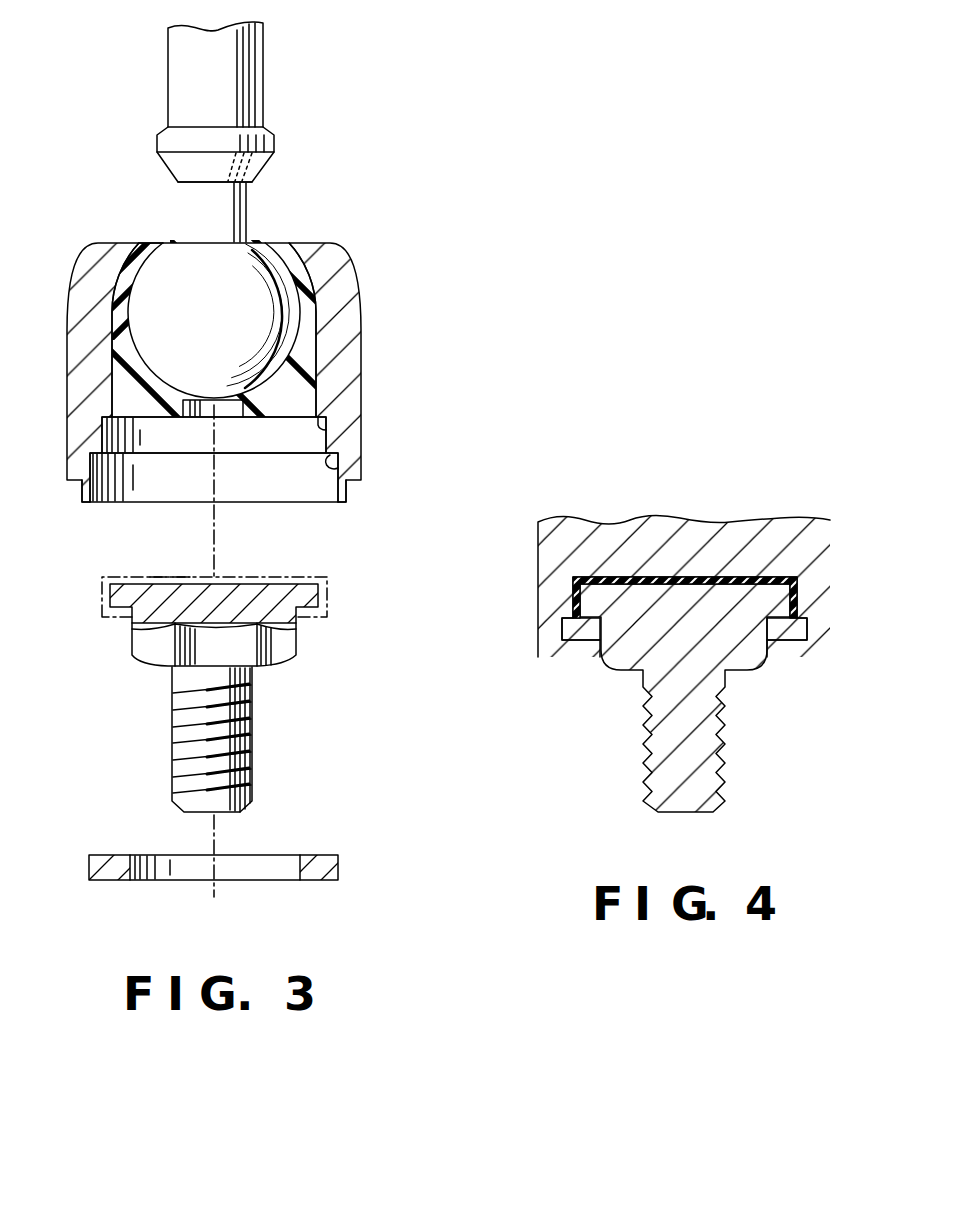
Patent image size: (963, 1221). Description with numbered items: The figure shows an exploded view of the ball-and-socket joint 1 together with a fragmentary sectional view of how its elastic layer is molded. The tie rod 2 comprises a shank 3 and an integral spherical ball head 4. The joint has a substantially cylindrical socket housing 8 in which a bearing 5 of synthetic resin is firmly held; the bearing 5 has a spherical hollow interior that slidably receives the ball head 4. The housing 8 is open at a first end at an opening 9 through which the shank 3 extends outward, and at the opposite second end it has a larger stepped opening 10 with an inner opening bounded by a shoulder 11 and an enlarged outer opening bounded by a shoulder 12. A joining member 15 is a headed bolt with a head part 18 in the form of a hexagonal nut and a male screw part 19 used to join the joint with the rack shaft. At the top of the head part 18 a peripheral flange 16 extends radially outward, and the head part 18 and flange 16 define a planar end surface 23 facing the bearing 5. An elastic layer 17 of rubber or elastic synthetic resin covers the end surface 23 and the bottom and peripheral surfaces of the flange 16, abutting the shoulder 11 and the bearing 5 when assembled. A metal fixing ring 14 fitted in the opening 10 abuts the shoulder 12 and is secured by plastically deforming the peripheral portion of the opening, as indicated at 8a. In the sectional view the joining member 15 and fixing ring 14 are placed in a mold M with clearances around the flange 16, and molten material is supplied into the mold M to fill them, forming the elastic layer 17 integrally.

In FIG. 3, the ball-and-socket joint 1 is at (381, 242).
In FIG. 3, the tie rod 2 is at (268, 73).
In FIG. 3, the shank 3 is at (178, 80).
In FIG. 3, the ball head 4 is at (250, 265).
In FIG. 3, the bearing 5 is at (312, 328).
In FIG. 3, the socket housing 8 is at (355, 358).
In FIG. 3, the plastically deformed peripheral portion of the opening 8a is at (350, 490).
In FIG. 3, the opening 9 is at (136, 243).
In FIG. 3, the opening 10 is at (128, 480).
In FIG. 3, the shoulder 11 is at (330, 440).
In FIG. 3, the shoulder 12 is at (345, 472).
In FIG. 3, the fixing ring 14 is at (322, 875).
In FIG. 4, the fixing ring 14 is at (785, 640).
In FIG. 3, the joining member 15 is at (264, 720).
In FIG. 4, the joining member 15 is at (731, 738).
In FIG. 3, the peripheral flange 16 is at (305, 600).
In FIG. 4, the peripheral flange 16 is at (775, 600).
In FIG. 3, the elastic layer 17 is at (250, 578).
In FIG. 4, the elastic layer 17 is at (742, 580).
In FIG. 3, the head part 18 is at (295, 655).
In FIG. 3, the male screw part 19 is at (255, 770).
In FIG. 4, the male screw part 19 is at (640, 753).
In FIG. 3, the planar end surface 23 is at (170, 590).
In FIG. 4, the mold M is at (627, 520).